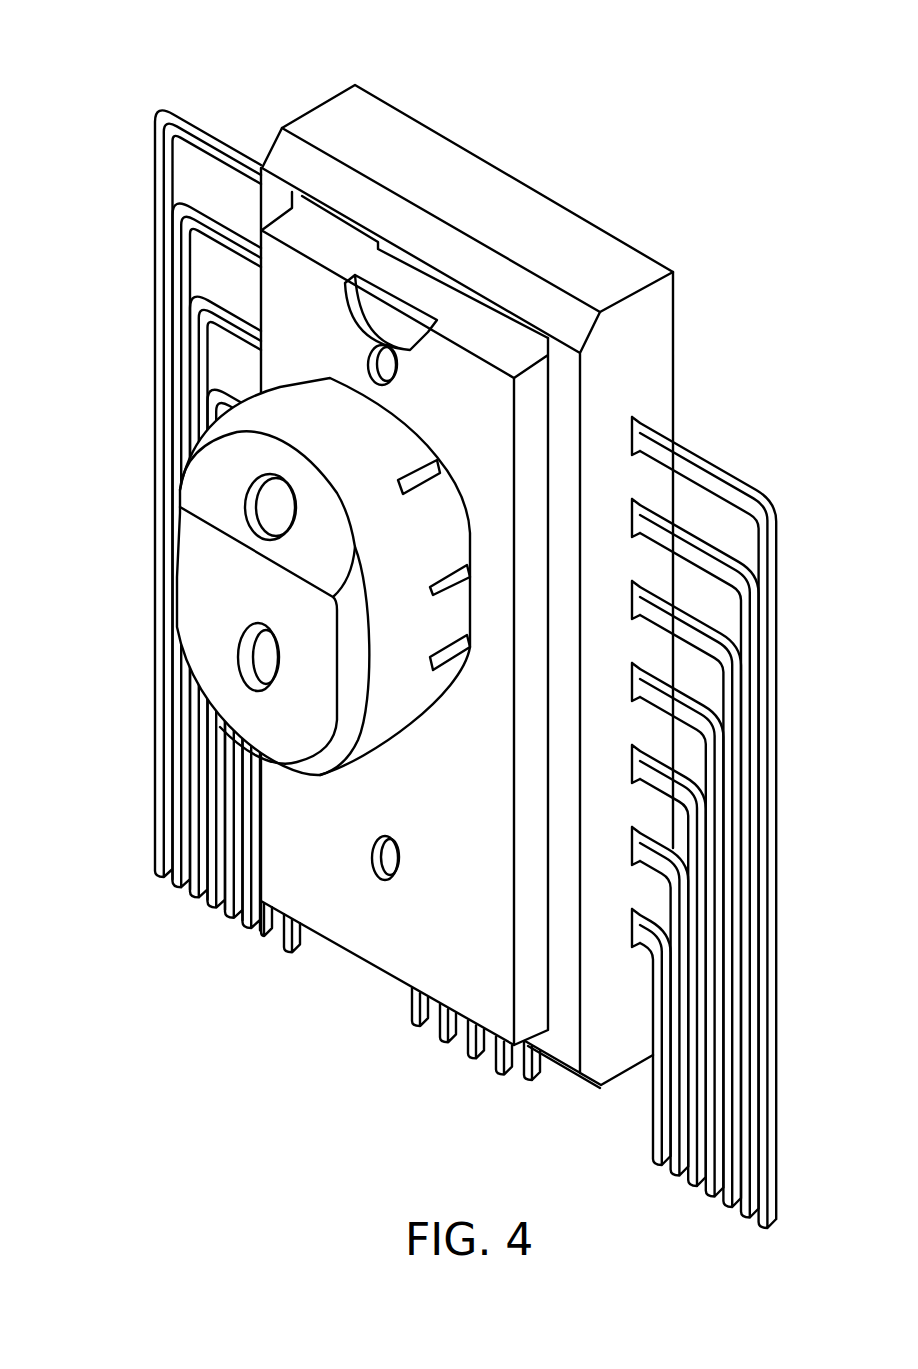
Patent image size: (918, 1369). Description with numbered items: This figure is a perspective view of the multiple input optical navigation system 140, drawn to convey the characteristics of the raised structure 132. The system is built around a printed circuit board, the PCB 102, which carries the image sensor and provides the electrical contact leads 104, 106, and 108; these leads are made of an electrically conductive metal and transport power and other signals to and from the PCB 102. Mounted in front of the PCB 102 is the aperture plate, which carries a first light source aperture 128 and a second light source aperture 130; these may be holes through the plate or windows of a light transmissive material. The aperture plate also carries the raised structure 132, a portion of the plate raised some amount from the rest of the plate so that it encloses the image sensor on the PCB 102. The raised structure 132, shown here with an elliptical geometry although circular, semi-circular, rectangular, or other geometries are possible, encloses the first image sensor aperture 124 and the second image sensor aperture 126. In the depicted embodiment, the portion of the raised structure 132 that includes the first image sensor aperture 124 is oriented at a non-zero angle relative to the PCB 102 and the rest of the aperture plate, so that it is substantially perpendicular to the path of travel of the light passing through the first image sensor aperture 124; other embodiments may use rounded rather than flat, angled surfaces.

The multiple input optical navigation system 140 is at (167, 48).
The printed circuit board 102 is at (520, 213).
The electrical contact lead 104 is at (137, 252).
The electrical contact lead 106 is at (753, 460).
The electrical contact lead 108 is at (384, 1017).
The first image sensor aperture 124 is at (244, 521).
The second image sensor aperture 126 is at (232, 662).
The first light source aperture 128 is at (364, 347).
The second light source aperture 130 is at (361, 873).
The raised structure 132 is at (398, 738).